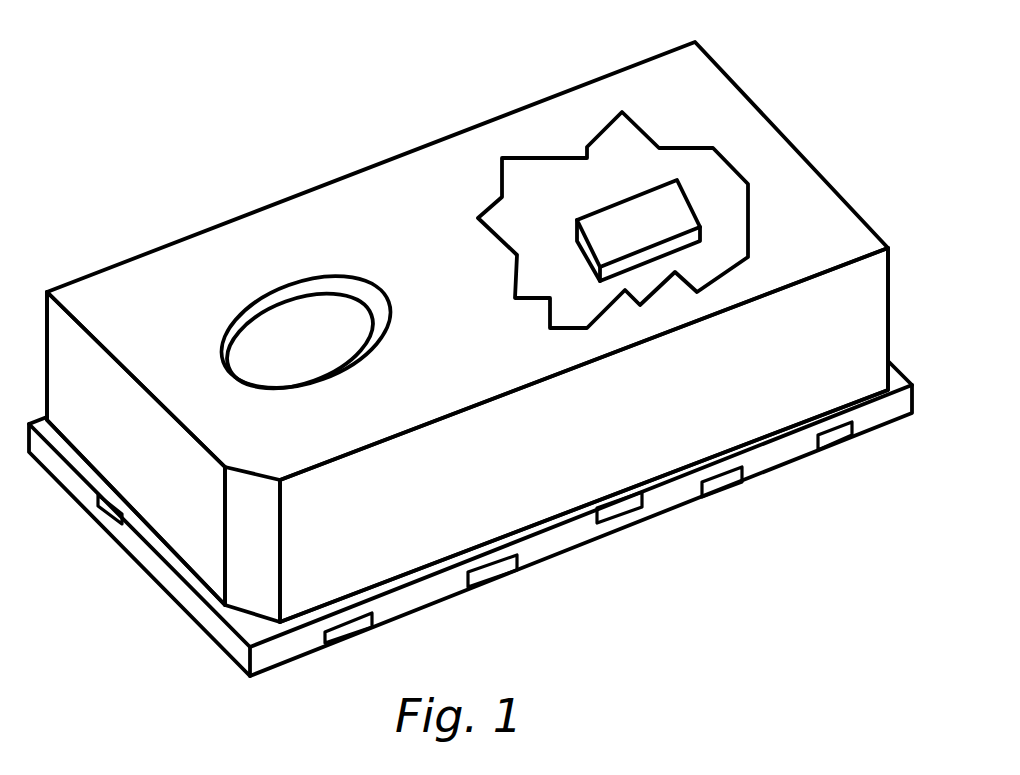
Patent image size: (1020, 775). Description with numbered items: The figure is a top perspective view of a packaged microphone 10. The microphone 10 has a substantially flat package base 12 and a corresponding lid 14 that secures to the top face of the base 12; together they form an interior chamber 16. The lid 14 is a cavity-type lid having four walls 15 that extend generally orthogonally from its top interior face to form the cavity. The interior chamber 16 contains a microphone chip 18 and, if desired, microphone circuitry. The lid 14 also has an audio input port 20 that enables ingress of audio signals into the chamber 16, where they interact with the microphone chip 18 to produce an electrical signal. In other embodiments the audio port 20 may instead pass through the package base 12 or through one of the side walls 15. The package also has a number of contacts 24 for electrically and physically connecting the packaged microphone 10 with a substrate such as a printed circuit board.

The packaged microphone 10 is at (387, 84).
The package base 12 is at (170, 578).
The lid 14 is at (624, 101).
The walls 15 is at (114, 451).
The interior chamber 16 is at (527, 240).
The microphone chip 18 is at (633, 225).
The audio input port 20 is at (320, 242).
The contacts 24 is at (497, 571).